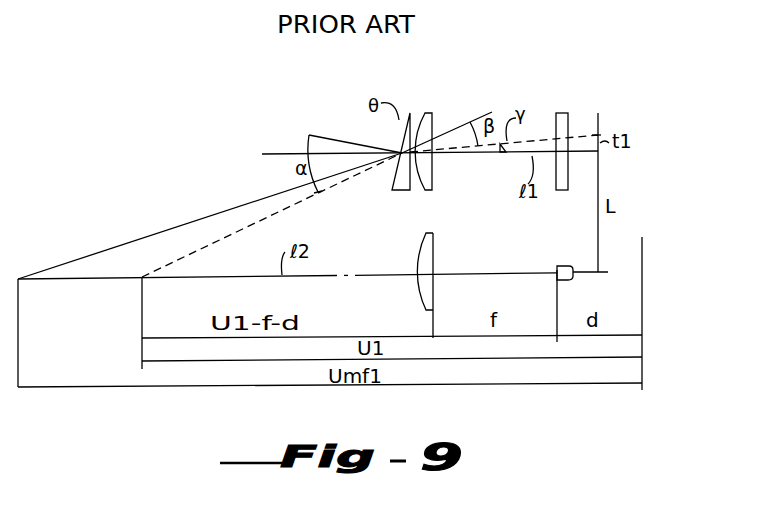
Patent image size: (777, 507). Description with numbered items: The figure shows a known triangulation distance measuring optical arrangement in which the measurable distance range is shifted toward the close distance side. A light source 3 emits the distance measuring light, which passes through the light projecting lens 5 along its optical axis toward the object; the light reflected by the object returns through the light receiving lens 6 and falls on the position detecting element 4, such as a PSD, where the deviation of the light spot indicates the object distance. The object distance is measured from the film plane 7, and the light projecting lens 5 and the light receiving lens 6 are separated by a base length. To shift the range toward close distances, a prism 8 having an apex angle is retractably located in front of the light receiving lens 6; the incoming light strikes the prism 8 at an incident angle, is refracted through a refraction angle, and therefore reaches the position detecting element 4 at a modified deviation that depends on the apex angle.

The light source 3 is at (558, 266).
The position detecting element 4 is at (566, 113).
The light projecting lens 5 is at (435, 250).
The light receiving lens 6 is at (430, 118).
The film plane 7 is at (645, 247).
The prism 8 is at (400, 192).